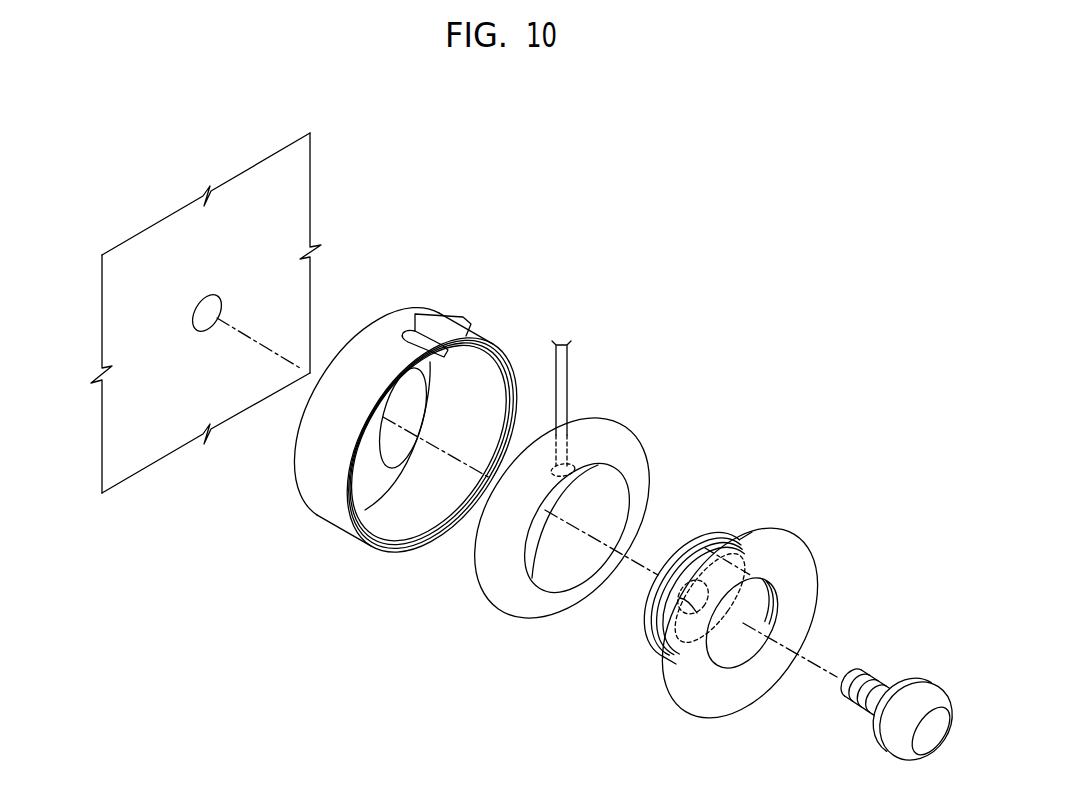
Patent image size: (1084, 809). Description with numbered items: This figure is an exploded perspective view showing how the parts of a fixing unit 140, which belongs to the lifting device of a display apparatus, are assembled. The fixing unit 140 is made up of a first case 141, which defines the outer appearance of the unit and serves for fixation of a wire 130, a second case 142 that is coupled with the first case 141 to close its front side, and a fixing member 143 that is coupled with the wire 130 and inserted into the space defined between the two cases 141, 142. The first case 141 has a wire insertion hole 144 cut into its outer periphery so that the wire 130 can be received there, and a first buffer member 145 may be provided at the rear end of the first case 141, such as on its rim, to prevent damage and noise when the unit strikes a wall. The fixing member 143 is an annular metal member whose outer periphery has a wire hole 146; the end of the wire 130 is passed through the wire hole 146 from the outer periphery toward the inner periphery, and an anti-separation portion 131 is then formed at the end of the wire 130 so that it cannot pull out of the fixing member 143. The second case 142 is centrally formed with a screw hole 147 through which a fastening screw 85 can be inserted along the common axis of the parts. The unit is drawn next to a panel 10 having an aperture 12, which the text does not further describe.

The panel 10 is at (110, 232).
The mounting hole 12 is at (207, 302).
The fixing unit 140 is at (835, 313).
The first case 141 is at (455, 330).
The wire insertion hole 144 is at (425, 322).
The first buffer member 145 is at (386, 550).
The fixing member 143 is at (498, 590).
The wire hole 146 is at (570, 442).
The second case 142 is at (759, 528).
The screw hole 147 is at (660, 629).
The wire 130 is at (568, 370).
The anti-separation portion 131 is at (575, 452).
The fastening screw 85 is at (908, 693).